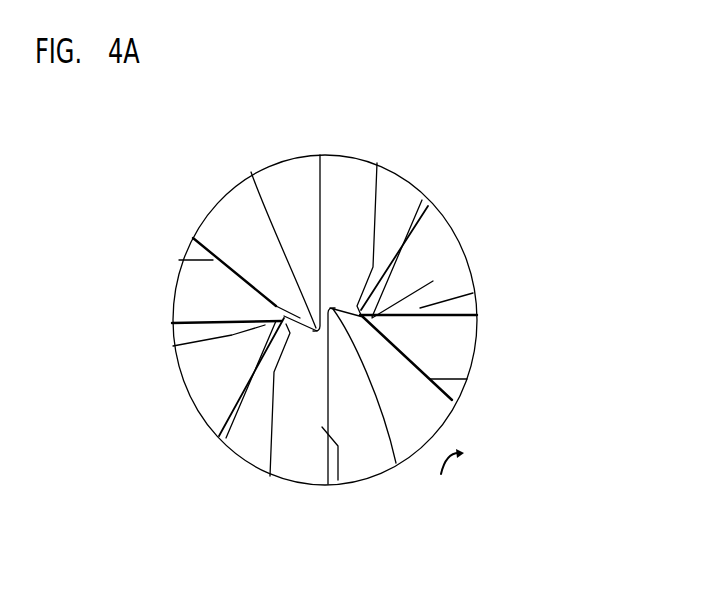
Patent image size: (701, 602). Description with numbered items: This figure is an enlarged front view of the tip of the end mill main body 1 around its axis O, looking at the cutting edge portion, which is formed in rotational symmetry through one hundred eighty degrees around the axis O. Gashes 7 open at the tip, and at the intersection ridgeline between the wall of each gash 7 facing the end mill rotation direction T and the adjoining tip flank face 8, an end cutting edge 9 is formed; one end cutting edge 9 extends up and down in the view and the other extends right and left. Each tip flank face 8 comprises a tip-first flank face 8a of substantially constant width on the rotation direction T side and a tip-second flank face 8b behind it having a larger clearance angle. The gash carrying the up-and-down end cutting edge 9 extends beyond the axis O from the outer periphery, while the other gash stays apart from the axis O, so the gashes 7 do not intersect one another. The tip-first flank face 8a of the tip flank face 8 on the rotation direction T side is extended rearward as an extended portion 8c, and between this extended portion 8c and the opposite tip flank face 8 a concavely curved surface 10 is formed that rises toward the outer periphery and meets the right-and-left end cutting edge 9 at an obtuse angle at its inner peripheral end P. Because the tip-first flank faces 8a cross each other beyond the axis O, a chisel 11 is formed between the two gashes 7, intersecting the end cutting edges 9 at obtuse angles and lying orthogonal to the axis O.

The end mill main body 1 is at (184, 201).
The gash 7 is at (289, 203).
The tip flank face 8 is at (373, 85).
The tip-first flank face 8a is at (353, 187).
The tip-second flank face 8b is at (397, 190).
The extended portion 8c is at (413, 190).
The end cutting edge 9 is at (316, 185).
The concavely curved surface 10 is at (436, 280).
The chisel 11 is at (253, 172).
The inner peripheral end P is at (457, 307).
The axis O is at (370, 420).
The end mill rotation direction T is at (454, 468).